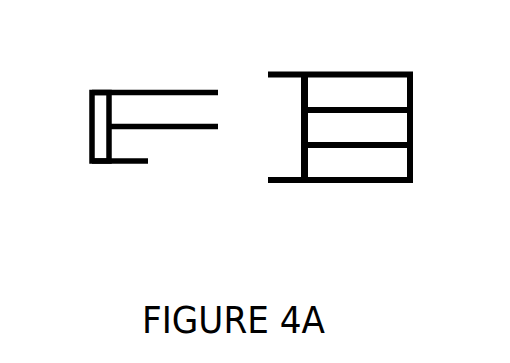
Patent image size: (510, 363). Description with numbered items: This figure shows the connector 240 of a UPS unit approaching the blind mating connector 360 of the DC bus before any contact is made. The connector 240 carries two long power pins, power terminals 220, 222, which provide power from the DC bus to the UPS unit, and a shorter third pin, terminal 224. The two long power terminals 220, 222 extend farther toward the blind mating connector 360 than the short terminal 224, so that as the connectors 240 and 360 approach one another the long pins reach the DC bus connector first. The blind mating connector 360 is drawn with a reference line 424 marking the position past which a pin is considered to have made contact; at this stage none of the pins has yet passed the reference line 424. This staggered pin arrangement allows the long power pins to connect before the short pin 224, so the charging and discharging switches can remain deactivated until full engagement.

The power terminal 220 is at (128, 90).
The power terminal 222 is at (217, 127).
The terminal 224 is at (147, 163).
The connector 240 is at (90, 163).
The blind mating connector 360 is at (372, 72).
The reference line 424 is at (302, 181).